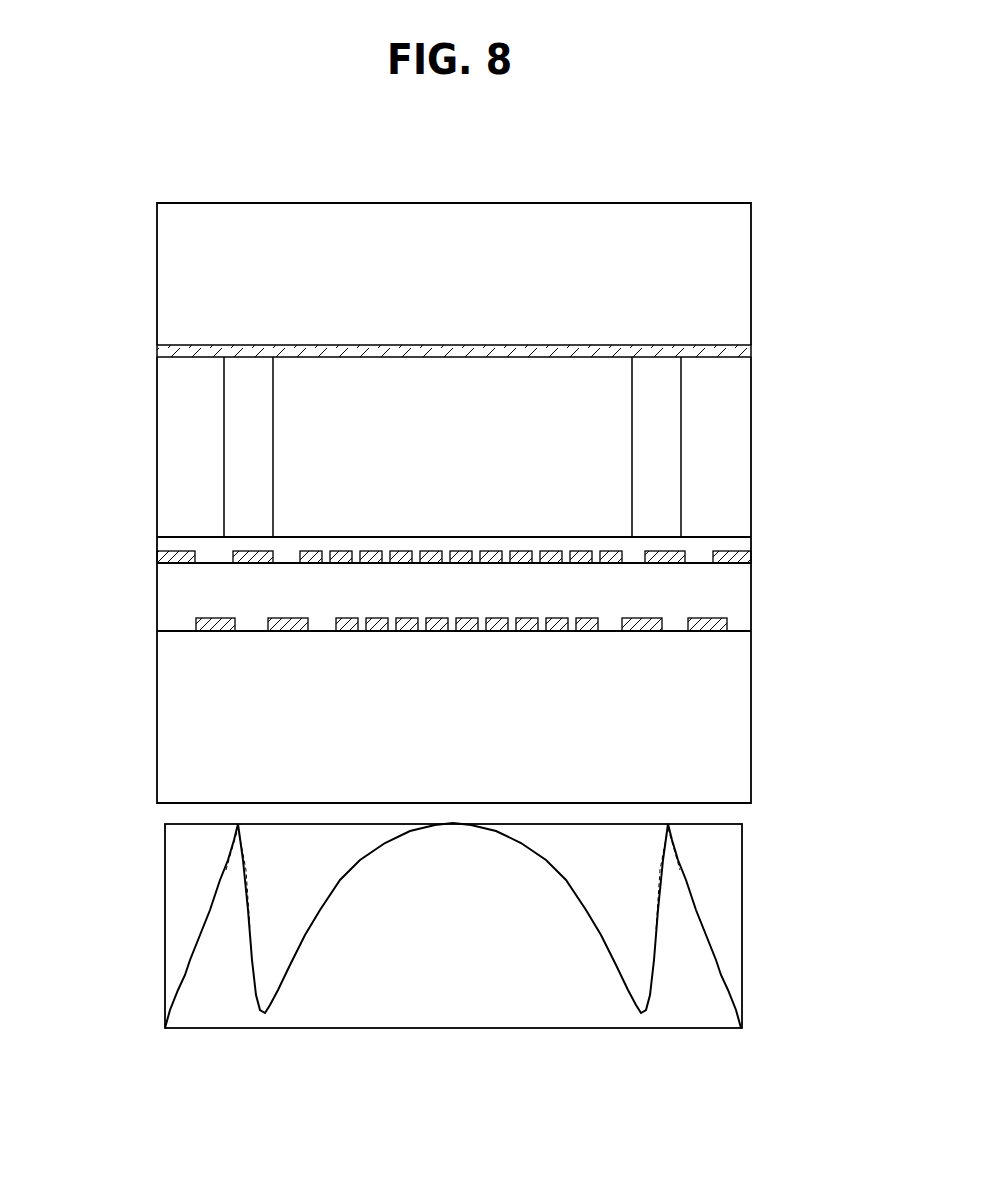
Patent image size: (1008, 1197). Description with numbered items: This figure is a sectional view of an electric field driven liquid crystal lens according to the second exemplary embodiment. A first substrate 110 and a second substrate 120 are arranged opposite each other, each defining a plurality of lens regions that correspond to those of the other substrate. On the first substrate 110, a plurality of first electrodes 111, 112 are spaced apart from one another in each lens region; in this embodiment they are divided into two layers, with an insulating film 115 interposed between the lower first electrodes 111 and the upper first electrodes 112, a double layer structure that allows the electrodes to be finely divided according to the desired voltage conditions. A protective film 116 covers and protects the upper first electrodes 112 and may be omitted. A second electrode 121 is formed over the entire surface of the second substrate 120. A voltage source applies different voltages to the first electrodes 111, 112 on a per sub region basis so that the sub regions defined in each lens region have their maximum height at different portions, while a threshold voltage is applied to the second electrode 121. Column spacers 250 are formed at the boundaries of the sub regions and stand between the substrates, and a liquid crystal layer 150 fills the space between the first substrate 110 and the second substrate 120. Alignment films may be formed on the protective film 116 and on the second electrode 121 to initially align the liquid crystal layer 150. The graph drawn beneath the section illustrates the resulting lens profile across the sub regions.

The second substrate 120 is at (745, 298).
The second electrode 121 is at (742, 356).
The liquid crystal layer 150 is at (742, 443).
The column spacers 250 is at (238, 445).
The protective film 116 is at (752, 537).
The first electrodes 112 is at (746, 557).
The insulating film 115 is at (746, 590).
The first electrodes 111 is at (745, 630).
The first substrate 110 is at (745, 713).